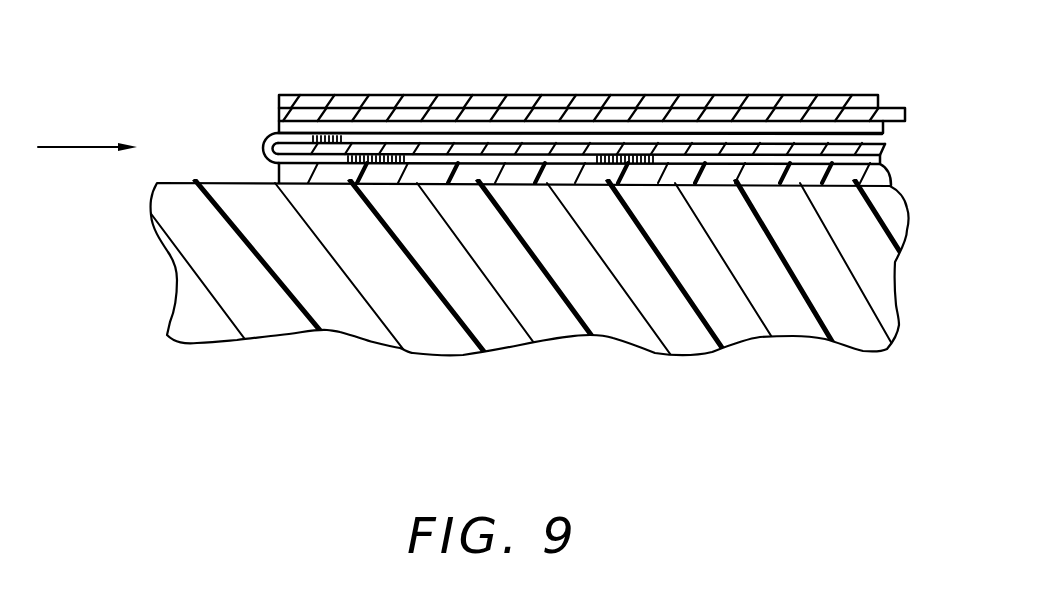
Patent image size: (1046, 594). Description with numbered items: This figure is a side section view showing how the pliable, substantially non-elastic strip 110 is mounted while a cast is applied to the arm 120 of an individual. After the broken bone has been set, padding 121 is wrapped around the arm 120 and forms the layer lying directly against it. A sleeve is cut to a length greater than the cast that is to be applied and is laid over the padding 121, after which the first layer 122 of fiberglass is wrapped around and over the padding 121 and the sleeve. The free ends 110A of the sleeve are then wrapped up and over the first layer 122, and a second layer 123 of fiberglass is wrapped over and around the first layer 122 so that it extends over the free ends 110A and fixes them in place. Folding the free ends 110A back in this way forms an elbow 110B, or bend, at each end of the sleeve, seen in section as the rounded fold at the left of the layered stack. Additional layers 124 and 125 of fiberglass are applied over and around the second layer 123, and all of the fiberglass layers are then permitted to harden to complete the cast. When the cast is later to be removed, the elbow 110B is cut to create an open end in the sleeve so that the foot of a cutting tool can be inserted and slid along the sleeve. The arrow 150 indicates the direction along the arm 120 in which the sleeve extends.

The pliable substantially non-elastic strip 110 is at (834, 152).
The free ends 110A is at (373, 138).
The elbow 110B is at (263, 148).
The arm 120 is at (504, 357).
The padding 121 is at (285, 172).
The first layer of fiberglass 122 is at (703, 150).
The second layer of fiberglass 123 is at (587, 122).
The additional layer of fiberglass 124 is at (472, 110).
The additional layer of fiberglass 125 is at (298, 100).
The direction of movement arrow 150 is at (87, 129).